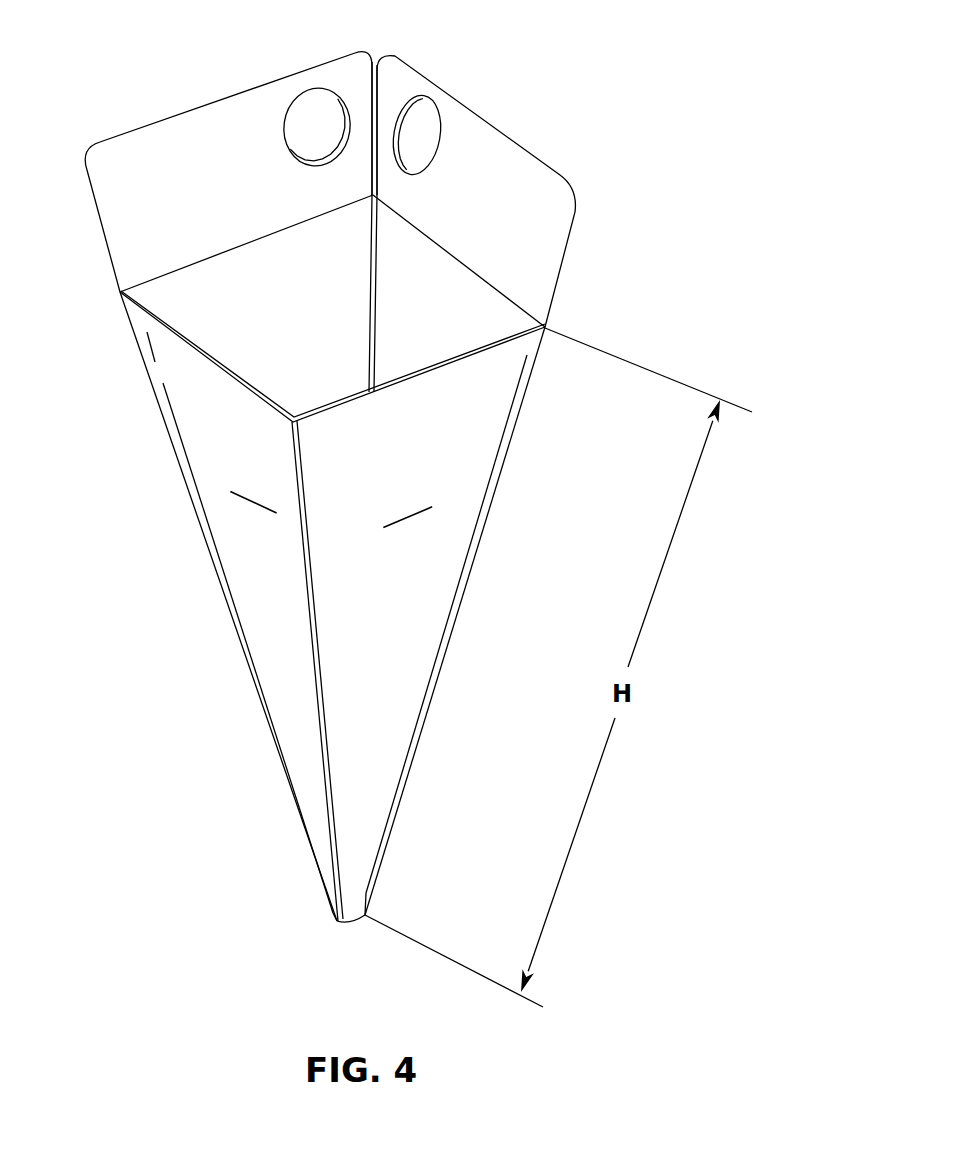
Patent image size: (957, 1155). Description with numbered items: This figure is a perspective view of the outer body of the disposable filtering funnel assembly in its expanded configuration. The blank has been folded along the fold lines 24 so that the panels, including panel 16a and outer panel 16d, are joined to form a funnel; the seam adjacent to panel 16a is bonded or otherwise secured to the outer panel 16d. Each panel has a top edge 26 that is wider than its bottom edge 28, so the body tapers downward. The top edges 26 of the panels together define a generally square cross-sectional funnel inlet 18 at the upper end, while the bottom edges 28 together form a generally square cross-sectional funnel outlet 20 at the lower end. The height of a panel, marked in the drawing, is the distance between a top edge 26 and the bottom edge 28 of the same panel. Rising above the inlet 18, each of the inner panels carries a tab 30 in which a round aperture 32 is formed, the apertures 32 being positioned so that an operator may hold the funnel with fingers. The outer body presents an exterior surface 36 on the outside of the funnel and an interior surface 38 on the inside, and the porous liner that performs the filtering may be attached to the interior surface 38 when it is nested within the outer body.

The panel 16a is at (228, 606).
The outer panel 16d is at (455, 621).
The funnel inlet 18 is at (228, 314).
The funnel outlet 20 is at (318, 934).
The fold line 24 is at (323, 740).
The top edge 26 is at (200, 355).
The bottom edge 28 is at (337, 920).
The tab 30 is at (192, 153).
The round aperture 32 is at (324, 100).
The exterior surface 36 is at (252, 543).
The interior surface 38 is at (478, 303).